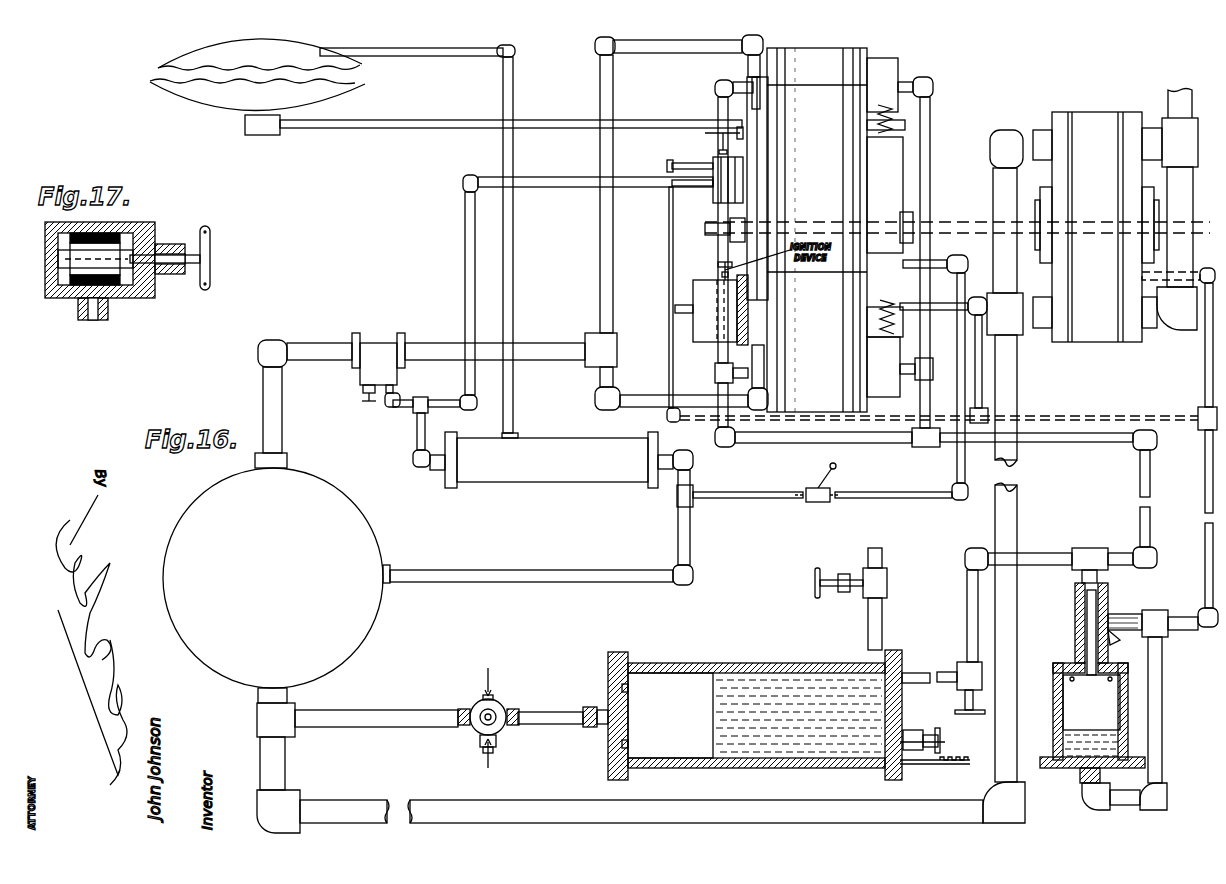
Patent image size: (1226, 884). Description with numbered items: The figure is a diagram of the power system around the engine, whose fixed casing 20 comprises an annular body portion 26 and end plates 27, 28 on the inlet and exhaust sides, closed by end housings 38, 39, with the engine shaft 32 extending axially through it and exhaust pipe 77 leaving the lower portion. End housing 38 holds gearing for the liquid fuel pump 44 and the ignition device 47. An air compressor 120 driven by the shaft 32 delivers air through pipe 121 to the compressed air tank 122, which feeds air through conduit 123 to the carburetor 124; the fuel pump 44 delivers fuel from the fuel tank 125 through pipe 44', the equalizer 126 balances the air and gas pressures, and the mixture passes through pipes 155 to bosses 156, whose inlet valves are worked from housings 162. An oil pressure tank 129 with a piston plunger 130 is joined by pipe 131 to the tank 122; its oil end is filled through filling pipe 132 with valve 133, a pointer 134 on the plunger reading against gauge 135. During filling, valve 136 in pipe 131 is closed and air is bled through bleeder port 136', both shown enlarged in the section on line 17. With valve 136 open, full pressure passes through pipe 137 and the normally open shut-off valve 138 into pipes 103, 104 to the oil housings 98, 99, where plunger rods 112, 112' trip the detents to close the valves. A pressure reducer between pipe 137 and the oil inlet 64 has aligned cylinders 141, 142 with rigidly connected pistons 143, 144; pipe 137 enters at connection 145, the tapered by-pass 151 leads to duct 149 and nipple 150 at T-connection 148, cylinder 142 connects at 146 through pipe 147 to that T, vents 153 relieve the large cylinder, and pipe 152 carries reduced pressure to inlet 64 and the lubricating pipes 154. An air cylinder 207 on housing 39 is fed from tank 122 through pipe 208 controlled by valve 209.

In FIG. 16, the fuel tank 125 is at (330, 70).
In FIG. 16, the pipes 155 is at (676, 42).
In FIG. 16, the carburetor 124 is at (378, 340).
In FIG. 16, the conduit 123 is at (282, 418).
In FIG. 16, the compressed air tank 122 is at (368, 535).
In FIG. 16, the pipe 44' is at (569, 292).
In FIG. 16, the equalizer 126 is at (581, 477).
In FIG. 16, the pipe 208 is at (930, 492).
In FIG. 16, the air cylinder 207 is at (925, 270).
In FIG. 16, the valve 209 is at (818, 502).
In FIG. 16, the pipe 131 is at (420, 710).
In FIG. 16, the valve 136 is at (503, 713).
In FIG. 17, the valve 136 is at (127, 250).
In FIG. 16, the bleeder port 136' is at (517, 747).
In FIG. 17, the bleeder port 136' is at (117, 309).
In FIG. 16, the section line 17 is at (495, 721).
In FIG. 16, the pipe 121 is at (402, 802).
In FIG. 16, the oil pressure tank 129 is at (783, 664).
In FIG. 16, the piston plunger 130 is at (684, 674).
In FIG. 16, the filling pipe 132 is at (882, 623).
In FIG. 16, the valve 133 is at (887, 588).
In FIG. 16, the pointer 134 is at (938, 741).
In FIG. 16, the gauge 135 is at (952, 766).
In FIG. 16, the shut-off valve 138 is at (958, 678).
In FIG. 16, the pipe 137 is at (930, 176).
In FIG. 16, the pipe 103 is at (742, 83).
In FIG. 16, the oil housing 98 is at (718, 108).
In FIG. 16, the pipes 154 is at (670, 166).
In FIG. 16, the pipe 152 is at (1098, 416).
In FIG. 16, the oil inlet 64 is at (945, 312).
In FIG. 16, the pipe 104 is at (916, 86).
In FIG. 16, the oil housing 99 is at (886, 70).
In FIG. 16, the fixed casing 20 is at (832, 165).
In FIG. 16, the end plate 27 is at (782, 52).
In FIG. 16, the annular body portion 26 is at (818, 52).
In FIG. 16, the end plate 28 is at (856, 54).
In FIG. 16, the exhaust pipe 77 is at (912, 134).
In FIG. 16, the plunger rod 112 is at (855, 129).
In FIG. 16, the plunger rod 112' is at (854, 323).
In FIG. 16, the end housing 39 is at (897, 160).
In FIG. 16, the engine shaft 32 is at (957, 222).
In FIG. 16, the end housing 38 is at (760, 200).
In FIG. 16, the liquid fuel pump 44 is at (687, 186).
In FIG. 16, the ignition device 47 is at (717, 276).
In FIG. 16, the housing 162 is at (700, 136).
In FIG. 16, the boss 156 is at (762, 318).
In FIG. 16, the air compressor 120 is at (1060, 82).
In FIG. 16, the connection 145 is at (1082, 578).
In FIG. 16, the cylinder 141 is at (1075, 608).
In FIG. 16, the piston 143 is at (1088, 633).
In FIG. 16, the by-pass 151 is at (1116, 614).
In FIG. 16, the nipple 150 is at (1130, 620).
In FIG. 16, the duct 149 is at (1112, 640).
In FIG. 16, the T-connection 148 is at (1160, 637).
In FIG. 16, the piston 144 is at (1070, 692).
In FIG. 16, the cylinder 142 is at (1130, 693).
In FIG. 16, the vents 153 is at (1110, 683).
In FIG. 16, the pipe 147 is at (1162, 740).
In FIG. 16, the connection 146 is at (1084, 782).